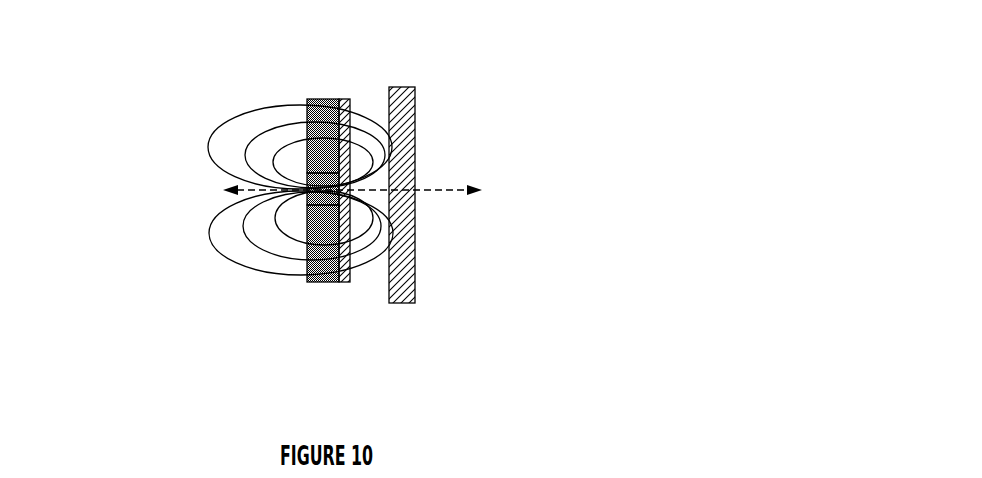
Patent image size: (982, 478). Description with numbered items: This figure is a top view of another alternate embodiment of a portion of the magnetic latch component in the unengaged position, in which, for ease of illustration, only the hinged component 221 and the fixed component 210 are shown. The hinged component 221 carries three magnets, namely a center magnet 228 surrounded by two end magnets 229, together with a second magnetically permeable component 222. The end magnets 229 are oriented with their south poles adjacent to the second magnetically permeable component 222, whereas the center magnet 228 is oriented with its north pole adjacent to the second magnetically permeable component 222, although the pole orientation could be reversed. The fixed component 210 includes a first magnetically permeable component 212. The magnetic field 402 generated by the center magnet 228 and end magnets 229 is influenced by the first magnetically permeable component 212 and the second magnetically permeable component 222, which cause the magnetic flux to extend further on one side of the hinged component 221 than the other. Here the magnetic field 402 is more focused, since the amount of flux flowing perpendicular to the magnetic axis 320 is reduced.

The fixed component 210 is at (532, 180).
The first magnetically permeable component 212 is at (403, 135).
The hinged component 221 is at (311, 256).
The second magnetically permeable component 222 is at (340, 274).
The center magnet 228 is at (312, 193).
The end magnet 229 is at (315, 258).
The magnetic axis 320 is at (452, 192).
The magnetic field 402 is at (208, 179).